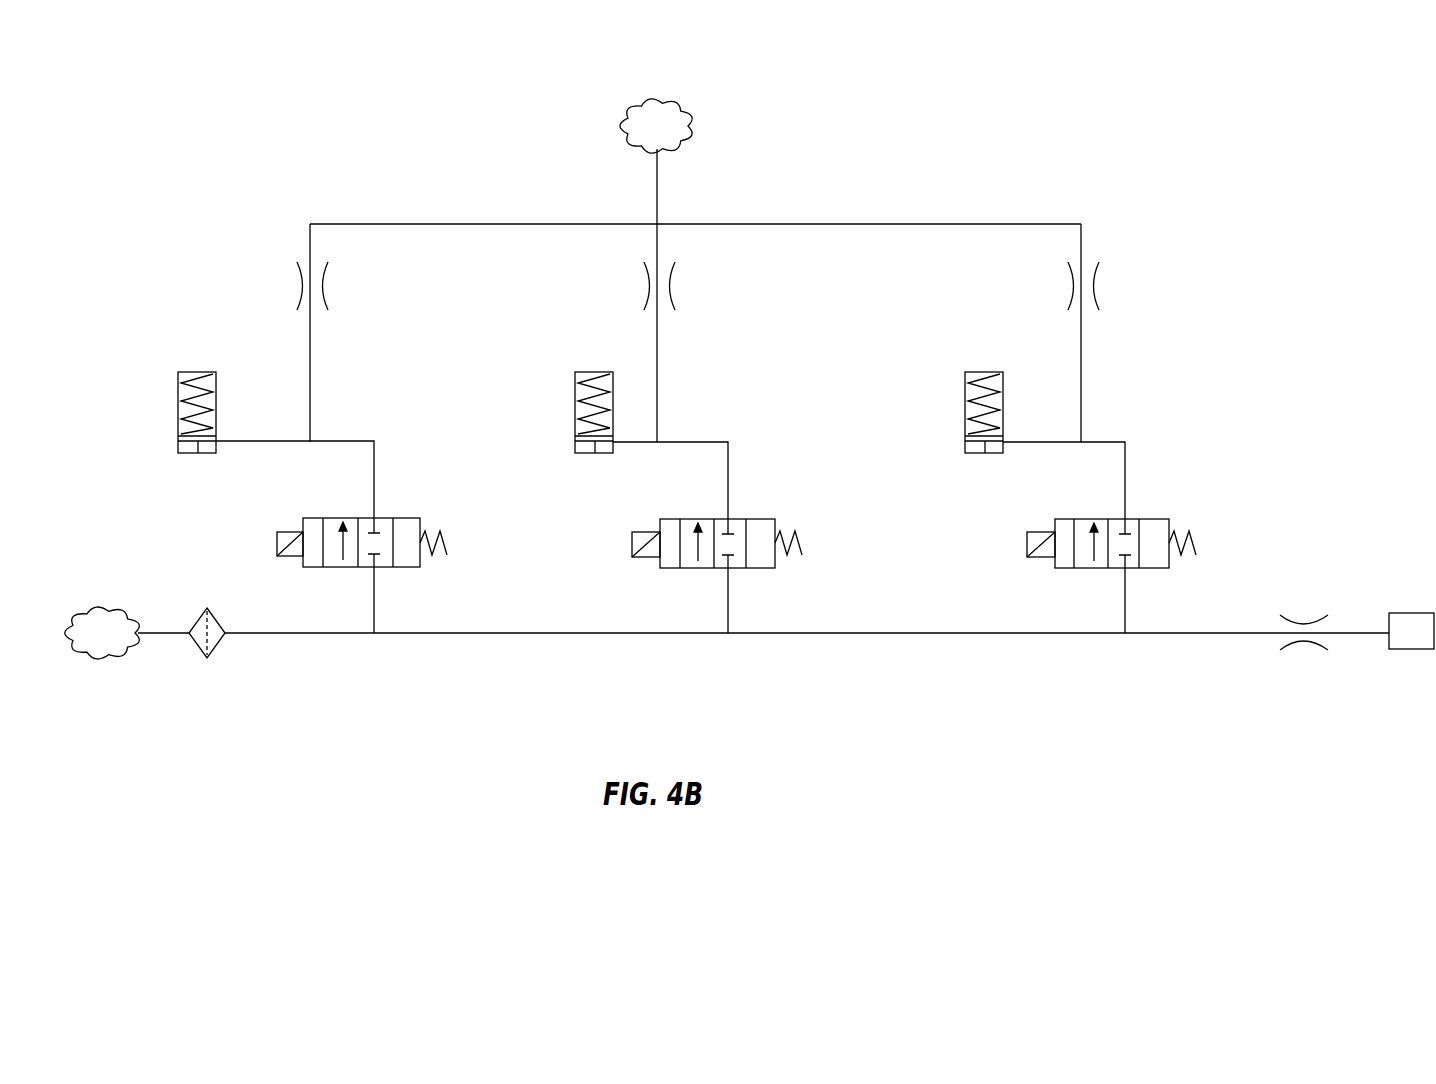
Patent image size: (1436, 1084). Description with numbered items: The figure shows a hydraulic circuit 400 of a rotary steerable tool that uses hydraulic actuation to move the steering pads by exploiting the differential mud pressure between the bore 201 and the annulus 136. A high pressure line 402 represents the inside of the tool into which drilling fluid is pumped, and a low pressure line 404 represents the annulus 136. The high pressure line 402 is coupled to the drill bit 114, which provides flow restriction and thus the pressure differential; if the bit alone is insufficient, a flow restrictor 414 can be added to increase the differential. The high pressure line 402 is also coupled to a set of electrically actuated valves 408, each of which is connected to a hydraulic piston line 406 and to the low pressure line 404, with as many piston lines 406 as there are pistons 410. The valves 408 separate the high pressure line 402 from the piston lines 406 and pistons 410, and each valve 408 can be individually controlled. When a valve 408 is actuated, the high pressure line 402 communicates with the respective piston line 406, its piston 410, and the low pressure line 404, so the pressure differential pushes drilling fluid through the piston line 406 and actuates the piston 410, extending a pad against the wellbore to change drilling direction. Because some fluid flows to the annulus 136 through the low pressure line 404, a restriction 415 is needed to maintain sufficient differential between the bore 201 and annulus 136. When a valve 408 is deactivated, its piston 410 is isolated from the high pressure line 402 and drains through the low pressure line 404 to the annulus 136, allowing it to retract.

The hydraulic circuit 400 is at (222, 118).
The annulus 136 is at (637, 135).
The low pressure line 404 is at (745, 223).
The restriction 415 is at (323, 287).
The piston 410 is at (178, 422).
The hydraulic piston line 406 is at (253, 440).
The electrically actuated valve 408 is at (403, 518).
The bore 201 is at (113, 608).
The high pressure line 402 is at (308, 634).
The flow restrictor 414 is at (1303, 641).
The drill bit 114 is at (1415, 613).